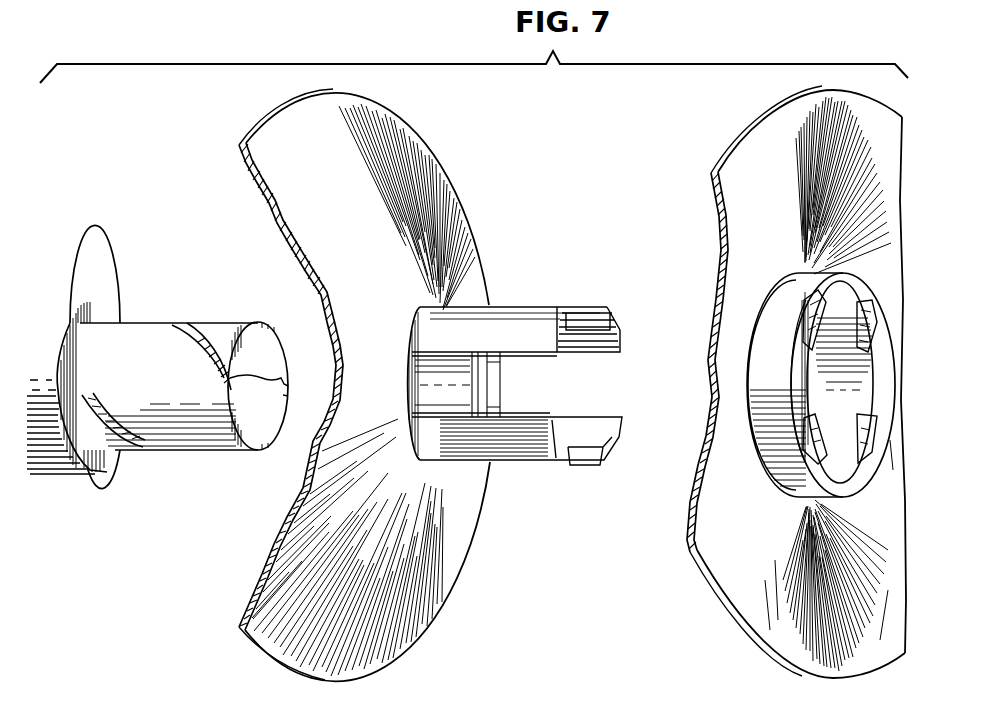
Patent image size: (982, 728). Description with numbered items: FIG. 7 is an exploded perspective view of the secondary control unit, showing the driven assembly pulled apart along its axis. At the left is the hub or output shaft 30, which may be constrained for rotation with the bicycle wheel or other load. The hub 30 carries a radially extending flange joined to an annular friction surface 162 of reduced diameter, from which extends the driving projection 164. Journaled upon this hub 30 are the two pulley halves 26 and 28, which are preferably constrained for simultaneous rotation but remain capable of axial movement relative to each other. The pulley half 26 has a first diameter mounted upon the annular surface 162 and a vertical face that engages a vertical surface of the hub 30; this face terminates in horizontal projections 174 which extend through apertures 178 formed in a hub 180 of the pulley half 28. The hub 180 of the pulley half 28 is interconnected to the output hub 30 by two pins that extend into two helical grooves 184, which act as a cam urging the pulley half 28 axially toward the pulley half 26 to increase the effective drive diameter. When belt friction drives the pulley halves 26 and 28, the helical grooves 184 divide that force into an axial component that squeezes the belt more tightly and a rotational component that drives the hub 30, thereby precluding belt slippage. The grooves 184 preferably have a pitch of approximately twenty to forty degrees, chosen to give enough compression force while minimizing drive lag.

The pulley half 26 is at (383, 275).
The pulley half 28 is at (778, 213).
The hub or output shaft 30 is at (275, 428).
The annular friction surface 162 is at (95, 302).
The driving projection 164 is at (146, 335).
The horizontal projections 174 is at (532, 430).
The apertures 178 is at (870, 440).
The hub 180 is at (778, 326).
The helical grooves 184 is at (281, 388).